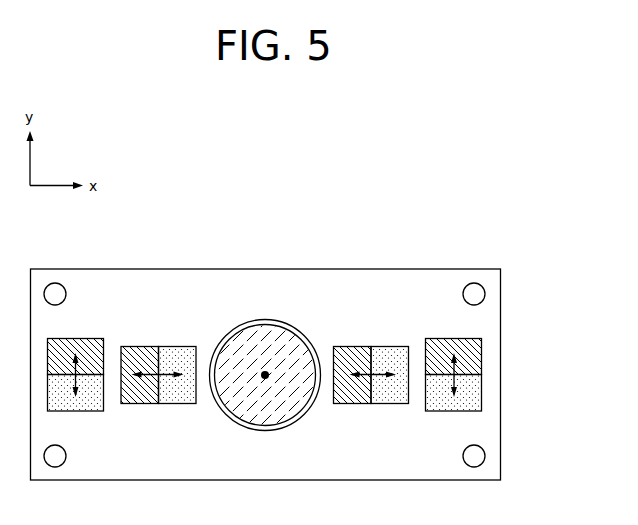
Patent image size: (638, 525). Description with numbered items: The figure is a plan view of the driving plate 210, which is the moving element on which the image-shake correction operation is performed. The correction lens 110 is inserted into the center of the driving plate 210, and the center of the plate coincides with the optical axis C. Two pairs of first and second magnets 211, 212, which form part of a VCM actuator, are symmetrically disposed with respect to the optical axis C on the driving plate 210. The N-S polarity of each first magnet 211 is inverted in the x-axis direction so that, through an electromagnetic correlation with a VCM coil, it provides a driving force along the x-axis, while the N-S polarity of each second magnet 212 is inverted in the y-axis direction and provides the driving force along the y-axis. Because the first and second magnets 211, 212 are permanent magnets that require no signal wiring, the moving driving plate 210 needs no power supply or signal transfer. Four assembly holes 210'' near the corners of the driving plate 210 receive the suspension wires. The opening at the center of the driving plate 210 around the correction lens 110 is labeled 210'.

The correction lens 110 is at (287, 347).
The driving plate 210 is at (266, 351).
The through hole of plate 210' is at (265, 326).
The assembly holes 210'' is at (518, 375).
The first magnet 211 is at (173, 399).
The second magnet 212 is at (93, 407).
The optical axis C is at (265, 379).